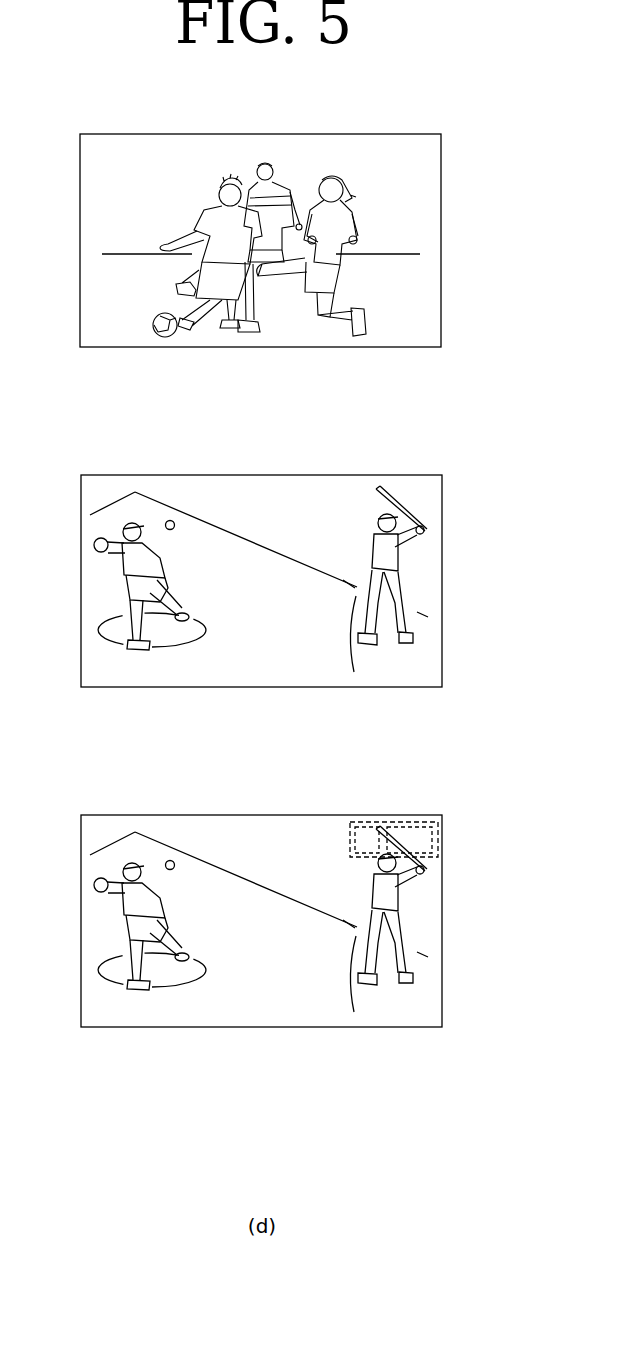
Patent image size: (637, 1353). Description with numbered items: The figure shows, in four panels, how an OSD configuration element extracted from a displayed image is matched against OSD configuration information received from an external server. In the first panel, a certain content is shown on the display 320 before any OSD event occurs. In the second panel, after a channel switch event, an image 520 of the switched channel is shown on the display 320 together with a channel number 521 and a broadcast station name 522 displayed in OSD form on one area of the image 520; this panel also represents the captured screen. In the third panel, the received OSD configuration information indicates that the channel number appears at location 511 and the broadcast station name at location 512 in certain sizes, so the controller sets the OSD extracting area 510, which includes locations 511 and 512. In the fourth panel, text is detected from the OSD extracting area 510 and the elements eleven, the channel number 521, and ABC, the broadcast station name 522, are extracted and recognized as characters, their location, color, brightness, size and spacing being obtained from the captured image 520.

The display 320 is at (235, 134).
The OSD extracting area 510 is at (437, 820).
The channel number display location 511 is at (363, 826).
The broadcast station name display location 512 is at (405, 826).
The image 520 is at (443, 534).
The channel number 521 is at (367, 486).
The broadcast station name 522 is at (410, 486).